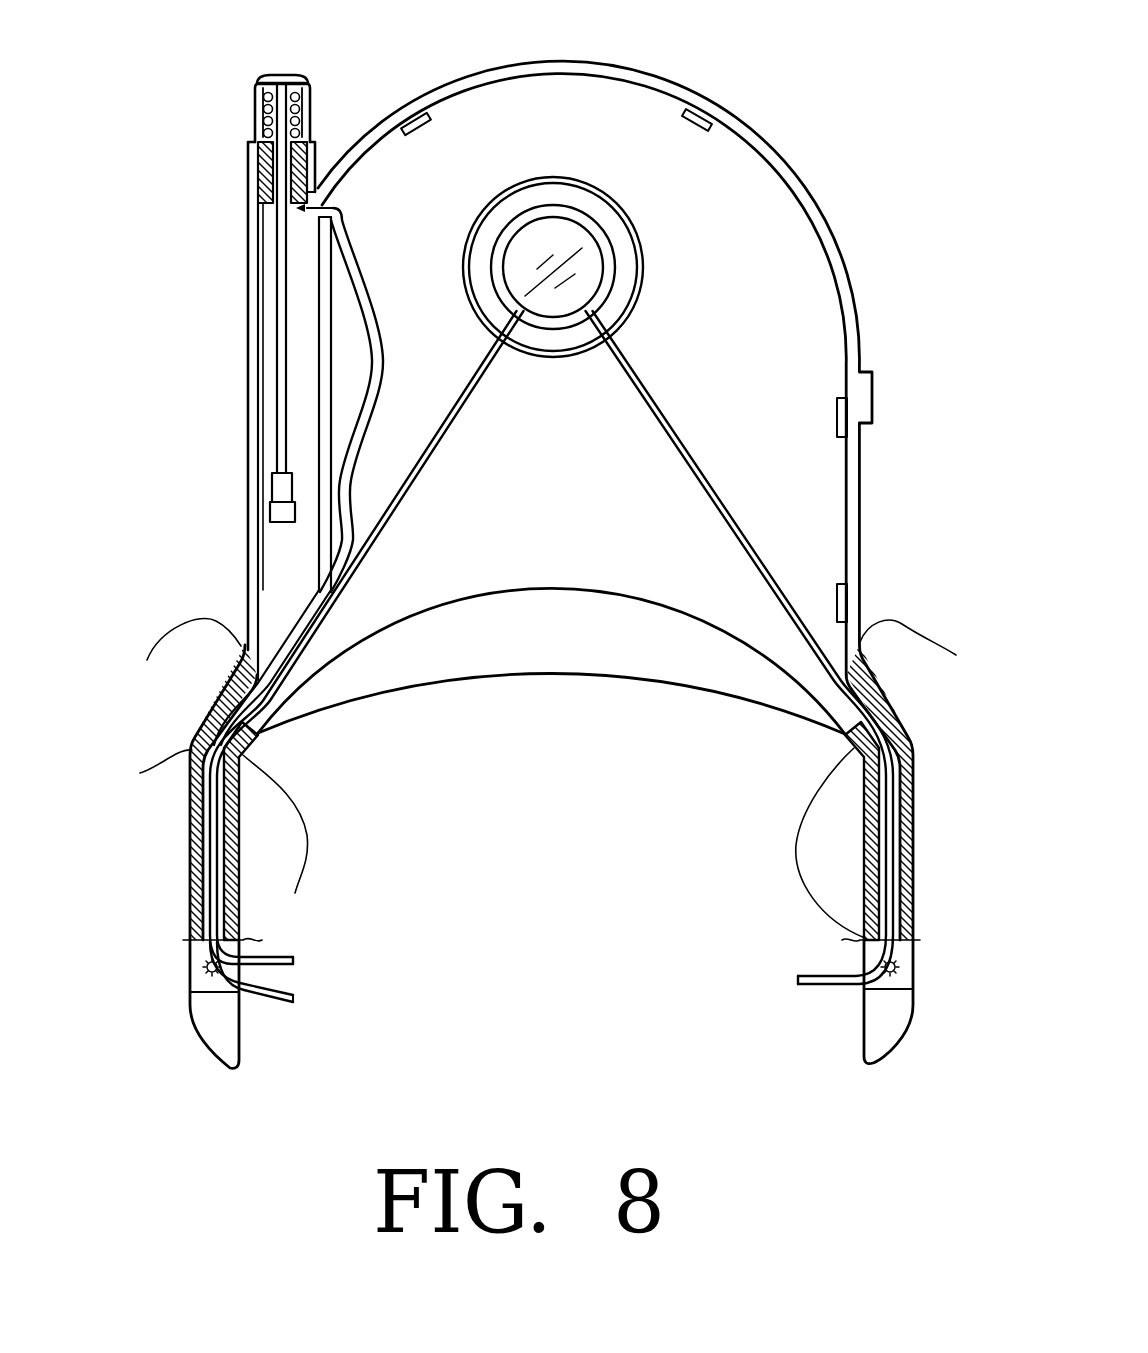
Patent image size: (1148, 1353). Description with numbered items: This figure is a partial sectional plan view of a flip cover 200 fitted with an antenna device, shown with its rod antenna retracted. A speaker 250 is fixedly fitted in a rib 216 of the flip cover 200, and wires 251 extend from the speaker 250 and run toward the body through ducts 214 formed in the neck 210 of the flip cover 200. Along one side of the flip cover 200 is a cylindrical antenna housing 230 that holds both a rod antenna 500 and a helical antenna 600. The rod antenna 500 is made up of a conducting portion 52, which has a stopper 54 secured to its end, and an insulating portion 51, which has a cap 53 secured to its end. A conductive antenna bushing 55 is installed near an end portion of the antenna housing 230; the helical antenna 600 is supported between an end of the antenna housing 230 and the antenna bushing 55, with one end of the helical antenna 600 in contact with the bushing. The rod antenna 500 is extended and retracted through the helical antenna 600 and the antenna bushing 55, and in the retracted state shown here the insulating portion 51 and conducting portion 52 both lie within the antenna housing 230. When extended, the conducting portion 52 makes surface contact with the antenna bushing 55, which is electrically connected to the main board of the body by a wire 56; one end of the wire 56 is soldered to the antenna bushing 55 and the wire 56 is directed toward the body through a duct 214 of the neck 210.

The cap 53 is at (285, 76).
The helical antenna 600 is at (258, 112).
The antenna bushing 55 is at (262, 168).
The rod antenna 500 is at (222, 372).
The insulating portion 51 is at (278, 285).
The antenna housing 230 is at (246, 360).
The conducting portion 52 is at (279, 492).
The stopper 54 is at (272, 508).
The neck 210 is at (190, 752).
The duct 214 is at (237, 818).
The wires 251 is at (443, 444).
The wire 56 is at (376, 300).
The rib 216 is at (553, 210).
The speaker 250 is at (598, 275).
The flip cover 200 is at (540, 697).